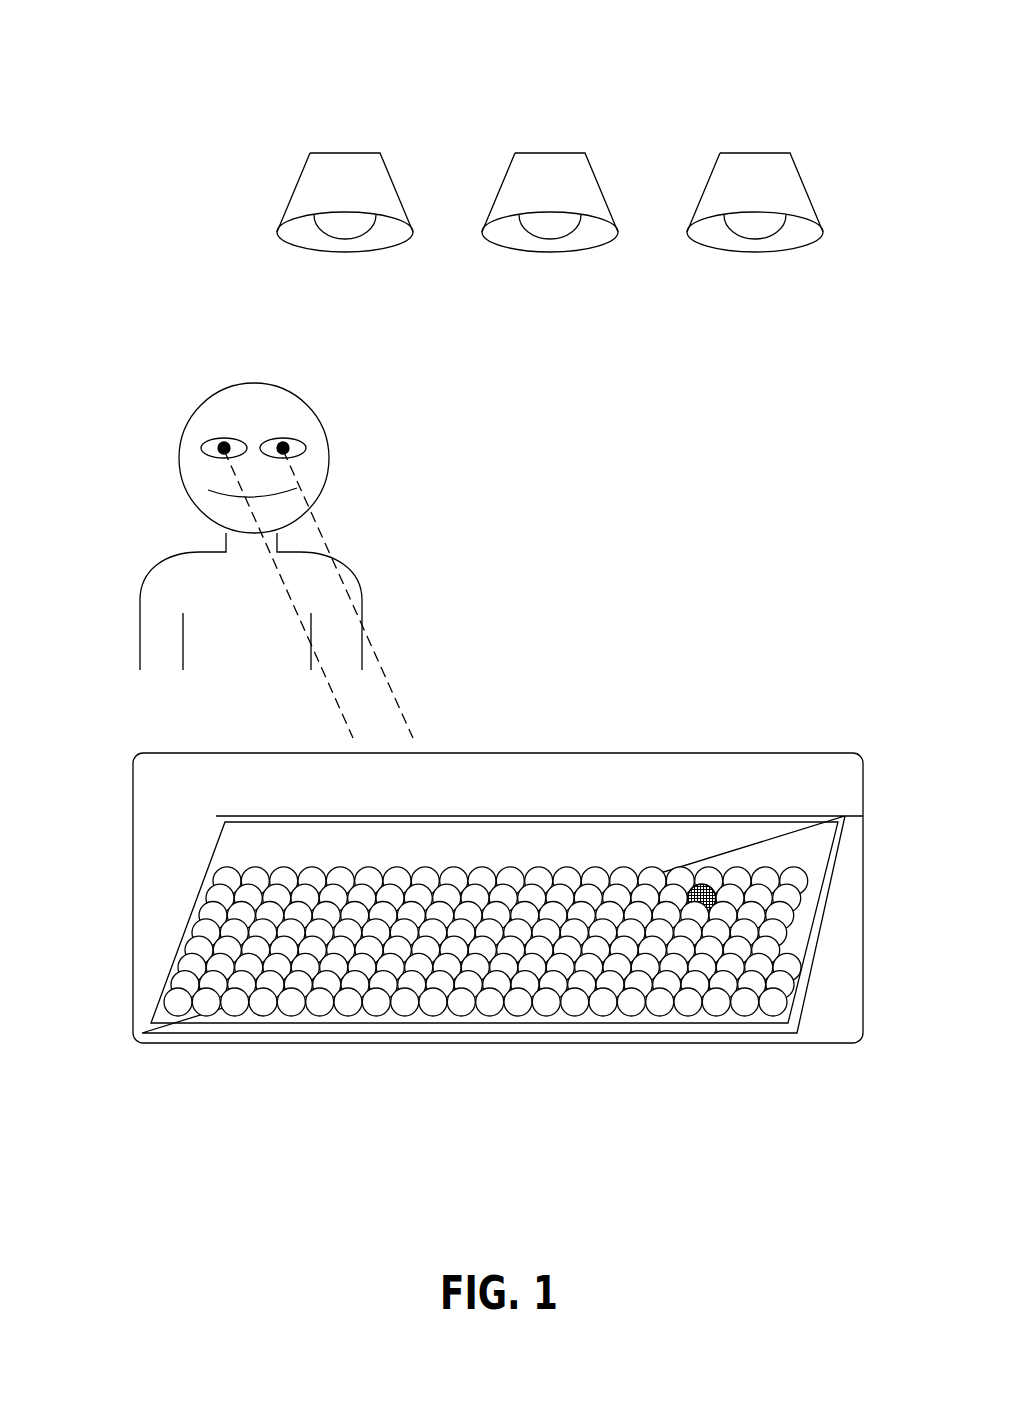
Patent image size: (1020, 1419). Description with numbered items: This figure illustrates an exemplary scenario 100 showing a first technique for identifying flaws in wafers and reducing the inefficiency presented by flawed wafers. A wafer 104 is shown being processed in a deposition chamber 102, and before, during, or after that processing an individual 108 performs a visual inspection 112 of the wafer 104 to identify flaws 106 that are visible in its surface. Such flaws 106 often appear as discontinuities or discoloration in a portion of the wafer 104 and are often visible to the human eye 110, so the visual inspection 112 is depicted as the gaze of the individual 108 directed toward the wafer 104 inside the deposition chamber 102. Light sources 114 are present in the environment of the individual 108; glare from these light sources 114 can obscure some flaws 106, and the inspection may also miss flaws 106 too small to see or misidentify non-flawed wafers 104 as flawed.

The exemplary scenario 100 is at (165, 32).
The deposition chamber 102 is at (207, 752).
The wafer 104 is at (502, 904).
The flaw 106 is at (705, 885).
The individual 108 is at (261, 518).
The human eye 110 is at (292, 440).
The visual inspection 112 is at (378, 660).
The light source 114 is at (345, 153).